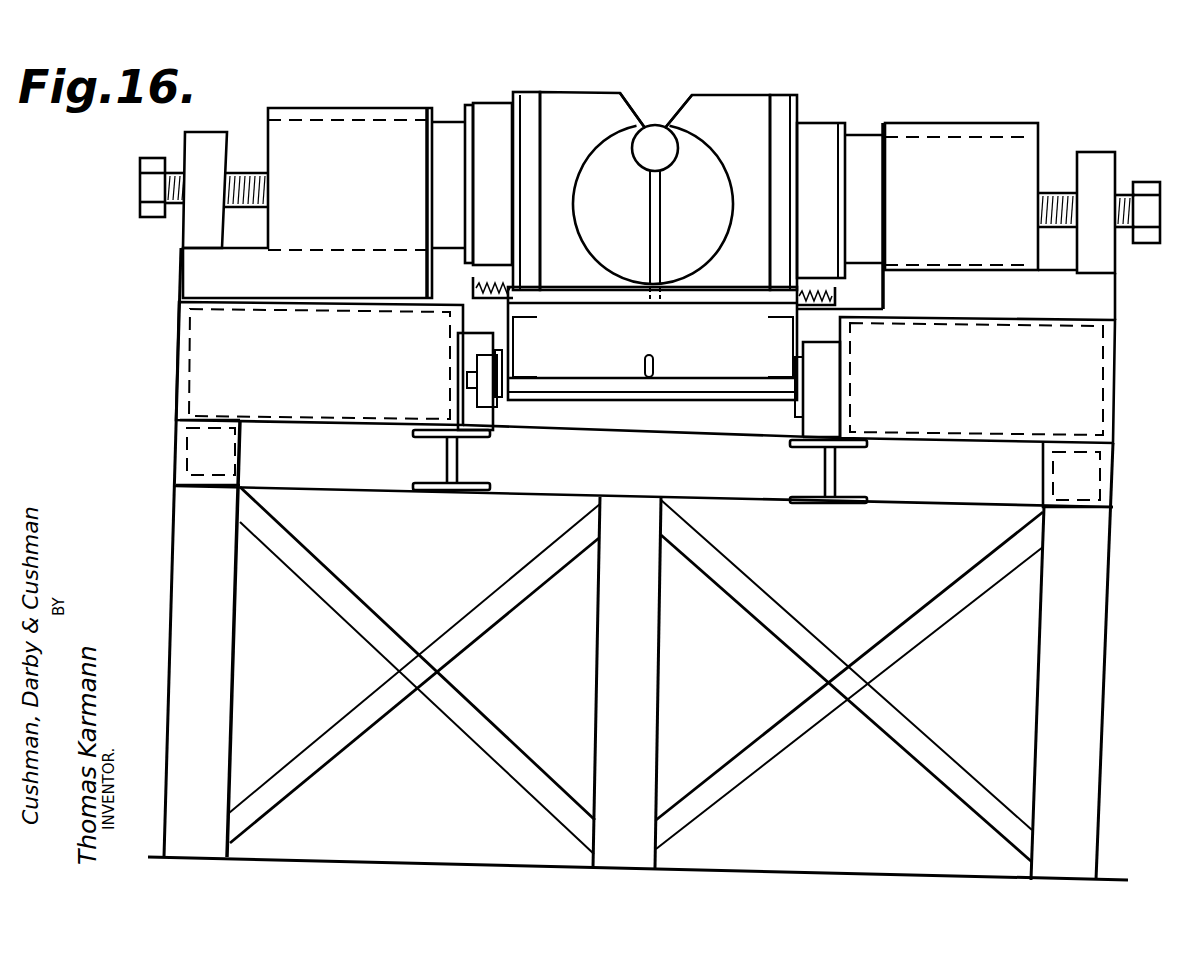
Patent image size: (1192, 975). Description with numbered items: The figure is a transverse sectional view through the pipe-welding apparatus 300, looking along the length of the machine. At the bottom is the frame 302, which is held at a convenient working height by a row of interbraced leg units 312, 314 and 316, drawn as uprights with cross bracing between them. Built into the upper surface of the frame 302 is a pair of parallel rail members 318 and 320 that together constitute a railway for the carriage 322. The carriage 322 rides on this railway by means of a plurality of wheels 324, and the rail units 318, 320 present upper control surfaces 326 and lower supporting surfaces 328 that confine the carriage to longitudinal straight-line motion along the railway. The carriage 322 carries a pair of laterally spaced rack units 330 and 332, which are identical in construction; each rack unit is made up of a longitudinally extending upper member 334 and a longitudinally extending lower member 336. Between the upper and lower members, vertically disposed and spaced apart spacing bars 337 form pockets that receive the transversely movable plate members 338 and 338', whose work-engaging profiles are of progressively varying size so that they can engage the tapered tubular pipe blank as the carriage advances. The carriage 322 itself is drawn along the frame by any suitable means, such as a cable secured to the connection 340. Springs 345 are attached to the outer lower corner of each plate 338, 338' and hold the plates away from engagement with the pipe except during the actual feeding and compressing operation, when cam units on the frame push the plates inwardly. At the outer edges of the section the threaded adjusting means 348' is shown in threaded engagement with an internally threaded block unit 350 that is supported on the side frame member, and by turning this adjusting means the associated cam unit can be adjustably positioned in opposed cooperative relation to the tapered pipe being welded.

The apparatus 300 is at (868, 107).
The frame 302 is at (1170, 486).
The leg unit 312 is at (238, 661).
The leg unit 314 is at (663, 681).
The leg unit 316 is at (1102, 646).
The rail member 318 is at (487, 437).
The rail member 320 is at (808, 445).
The carriage 322 is at (624, 398).
The wheels 324 is at (477, 372).
The upper control surfaces 326 is at (830, 351).
The lower supporting surfaces 328 is at (827, 426).
The rack unit 330 is at (508, 101).
The rack unit 332 is at (781, 100).
The upper member 334 is at (545, 88).
The lower member 336 is at (586, 262).
The spacing bars 337 is at (638, 301).
The plate member 338 is at (649, 127).
The plate member 338' is at (658, 177).
The connection 340 is at (656, 367).
The springs 345 is at (490, 264).
The threaded adjusting means 348' is at (156, 217).
The internally threaded block unit 350 is at (198, 150).